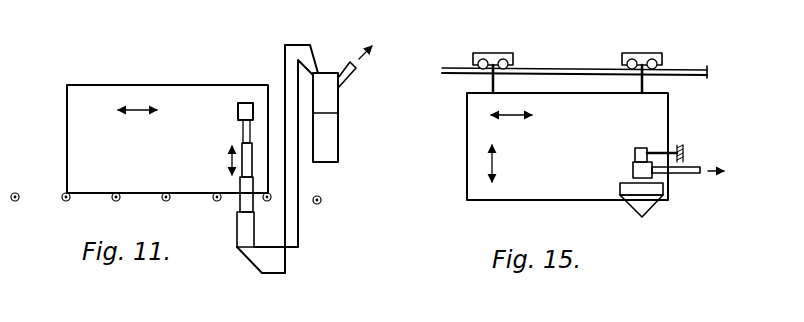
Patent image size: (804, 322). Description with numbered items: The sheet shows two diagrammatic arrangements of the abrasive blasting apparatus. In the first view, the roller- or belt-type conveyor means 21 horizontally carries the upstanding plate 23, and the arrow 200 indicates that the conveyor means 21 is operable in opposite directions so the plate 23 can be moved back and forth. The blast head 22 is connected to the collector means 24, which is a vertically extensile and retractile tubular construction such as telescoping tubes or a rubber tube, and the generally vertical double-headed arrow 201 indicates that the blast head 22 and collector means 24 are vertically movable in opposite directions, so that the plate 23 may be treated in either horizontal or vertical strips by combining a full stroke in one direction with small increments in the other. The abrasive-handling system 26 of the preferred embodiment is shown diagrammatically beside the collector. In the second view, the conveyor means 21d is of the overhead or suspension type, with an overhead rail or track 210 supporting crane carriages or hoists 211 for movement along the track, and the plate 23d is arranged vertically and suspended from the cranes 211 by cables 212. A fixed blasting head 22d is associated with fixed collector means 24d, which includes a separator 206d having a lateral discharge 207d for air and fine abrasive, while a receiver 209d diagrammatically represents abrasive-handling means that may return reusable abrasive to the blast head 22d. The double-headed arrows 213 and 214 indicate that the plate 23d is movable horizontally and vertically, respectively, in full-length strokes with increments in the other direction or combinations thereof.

In FIG. 11, the conveyor means 21 is at (322, 200).
In FIG. 11, the blast head 22 is at (240, 103).
In FIG. 11, the upstanding plate 23 is at (130, 88).
In FIG. 11, the collector means 24 is at (237, 237).
In FIG. 11, the abrasive-handling system 26 is at (290, 229).
In FIG. 11, the arrow 200 is at (137, 112).
In FIG. 11, the double-headed arrow 201 is at (228, 158).
In FIG. 15, the conveyor means 21d is at (598, 56).
In FIG. 15, the blast head 22d is at (640, 148).
In FIG. 15, the plate 23d is at (588, 200).
In FIG. 15, the fixed collector means 24d is at (633, 170).
In FIG. 15, the separator 206d is at (635, 156).
In FIG. 15, the lateral discharge 207d is at (680, 175).
In FIG. 15, the receiver 209d is at (665, 197).
In FIG. 15, the overhead rail or track 210 is at (707, 77).
In FIG. 15, the crane carriages or hoists 211 is at (497, 54).
In FIG. 15, the cables 212 is at (500, 82).
In FIG. 15, the double-headed arrow 213 is at (512, 118).
In FIG. 15, the double-headed arrow 214 is at (495, 170).